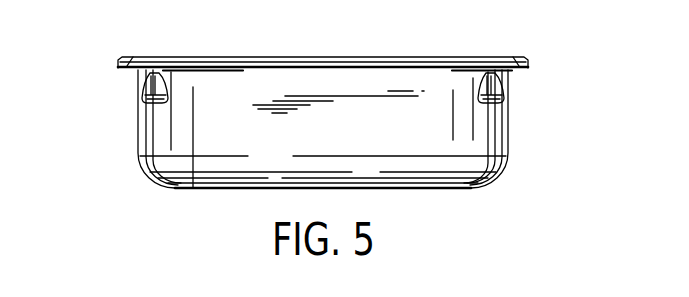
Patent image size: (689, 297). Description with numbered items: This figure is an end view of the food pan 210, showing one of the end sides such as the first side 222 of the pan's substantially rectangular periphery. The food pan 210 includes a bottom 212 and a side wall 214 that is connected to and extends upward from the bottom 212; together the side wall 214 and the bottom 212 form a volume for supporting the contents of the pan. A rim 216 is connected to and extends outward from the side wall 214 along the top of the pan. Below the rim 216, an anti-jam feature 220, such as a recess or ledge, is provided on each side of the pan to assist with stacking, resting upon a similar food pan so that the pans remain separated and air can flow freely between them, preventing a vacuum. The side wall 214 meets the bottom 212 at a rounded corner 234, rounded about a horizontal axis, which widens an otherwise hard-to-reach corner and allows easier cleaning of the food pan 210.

The food pan 210 is at (107, 154).
The bottom 212 is at (198, 188).
The side wall 214 is at (246, 136).
The rim 216 is at (445, 63).
The anti-jam feature 220 is at (142, 88).
The first side 222 is at (413, 132).
The rounded corner 234 is at (493, 178).